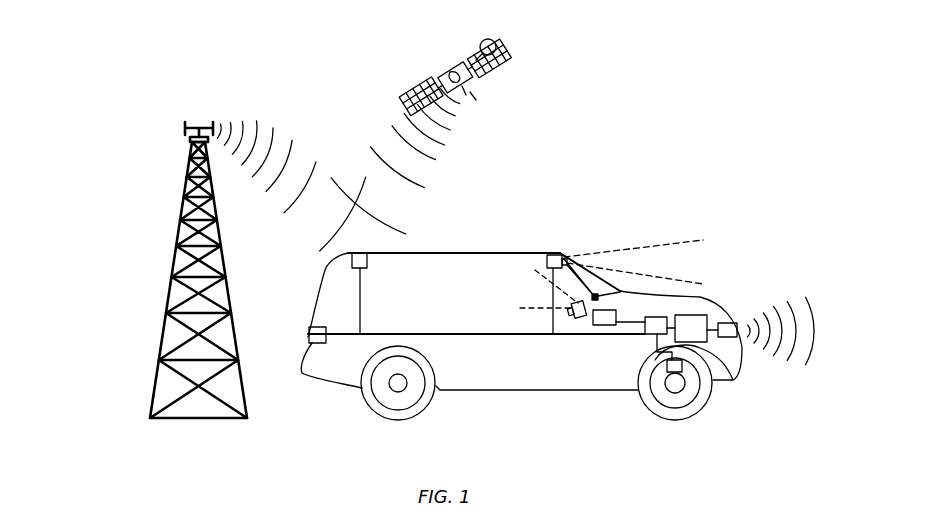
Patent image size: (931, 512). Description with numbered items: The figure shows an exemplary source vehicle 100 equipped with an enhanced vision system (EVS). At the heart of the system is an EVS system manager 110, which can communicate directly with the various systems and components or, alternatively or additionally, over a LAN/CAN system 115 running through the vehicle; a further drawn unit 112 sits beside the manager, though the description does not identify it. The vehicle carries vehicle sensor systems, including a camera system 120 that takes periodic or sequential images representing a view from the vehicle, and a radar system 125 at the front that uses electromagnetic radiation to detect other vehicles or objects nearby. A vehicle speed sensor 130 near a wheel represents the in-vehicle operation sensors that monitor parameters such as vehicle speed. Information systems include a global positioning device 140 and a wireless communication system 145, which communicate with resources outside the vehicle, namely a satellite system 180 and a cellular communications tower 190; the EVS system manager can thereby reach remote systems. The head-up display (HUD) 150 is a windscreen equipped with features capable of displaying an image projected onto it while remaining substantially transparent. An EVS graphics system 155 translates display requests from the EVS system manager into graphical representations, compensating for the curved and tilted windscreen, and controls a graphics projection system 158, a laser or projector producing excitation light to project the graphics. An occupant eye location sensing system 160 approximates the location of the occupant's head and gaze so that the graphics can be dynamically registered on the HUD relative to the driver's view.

The source vehicle 100 is at (492, 252).
The EVS system manager 110 is at (708, 340).
The communication module 112 is at (660, 317).
The LAN/CAN system 115 is at (387, 333).
The camera system 120 is at (556, 255).
The radar system 125 is at (742, 322).
The vehicle speed sensor 130 is at (682, 368).
The global positioning device 140 is at (308, 338).
The wireless communication system 145 is at (352, 259).
The head-up display (HUD) 150 is at (620, 292).
The EVS graphics system 155 is at (606, 320).
The graphics projection system 158 is at (598, 293).
The occupant eye location sensing system 160 is at (580, 318).
The satellite system 180 is at (450, 73).
The cellular communications tower 190 is at (173, 243).